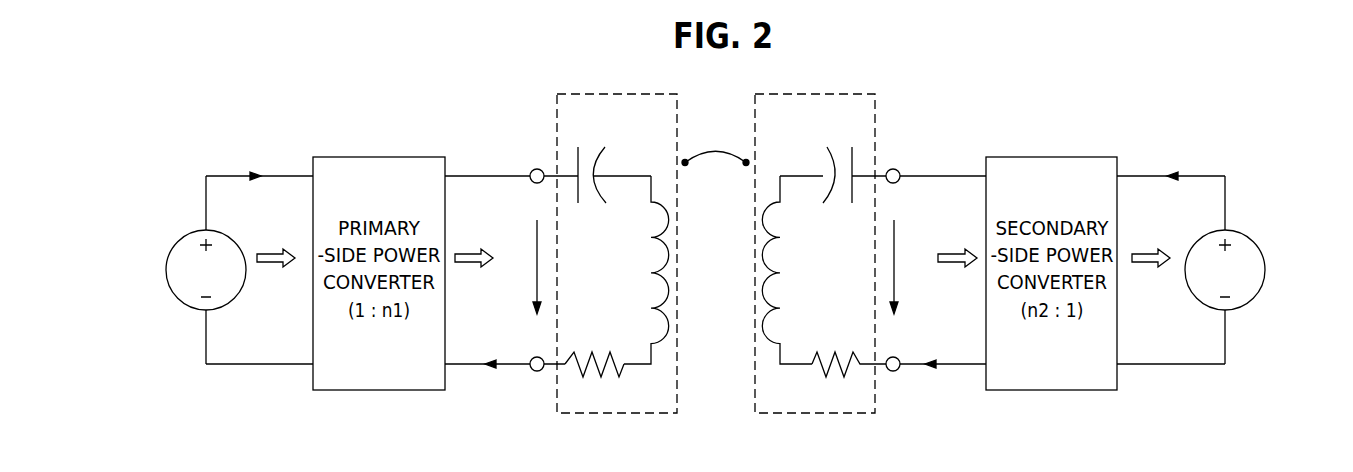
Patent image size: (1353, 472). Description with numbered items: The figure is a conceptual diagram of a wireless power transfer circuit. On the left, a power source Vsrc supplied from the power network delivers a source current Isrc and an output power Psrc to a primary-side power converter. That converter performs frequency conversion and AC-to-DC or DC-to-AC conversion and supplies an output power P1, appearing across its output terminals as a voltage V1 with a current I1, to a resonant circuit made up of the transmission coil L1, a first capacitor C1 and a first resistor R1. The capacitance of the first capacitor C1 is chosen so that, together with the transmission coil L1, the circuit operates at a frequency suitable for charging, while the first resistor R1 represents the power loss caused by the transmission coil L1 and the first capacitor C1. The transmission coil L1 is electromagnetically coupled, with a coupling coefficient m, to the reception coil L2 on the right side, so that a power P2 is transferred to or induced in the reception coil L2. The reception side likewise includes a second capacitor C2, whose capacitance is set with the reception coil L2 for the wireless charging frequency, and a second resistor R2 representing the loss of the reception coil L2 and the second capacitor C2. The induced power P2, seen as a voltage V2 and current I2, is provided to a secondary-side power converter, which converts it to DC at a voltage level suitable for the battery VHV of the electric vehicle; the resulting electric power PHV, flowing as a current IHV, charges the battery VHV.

The power source Vsrc is at (185, 270).
The source current Isrc is at (259, 161).
The output power Psrc is at (275, 241).
The output power P1 is at (474, 241).
The primary side voltage V1 is at (526, 267).
The primary side current I1 is at (505, 349).
The first capacitor C1 is at (614, 158).
The transmission coil L1 is at (646, 270).
The first resistor R1 is at (594, 346).
The coupling coefficient m is at (715, 144).
The second capacitor C2 is at (833, 157).
The reception coil L2 is at (787, 270).
The second resistor R2 is at (849, 346).
The secondary side voltage V2 is at (906, 267).
The power P2 is at (957, 241).
The secondary side current I2 is at (943, 348).
The electric power PHV is at (1148, 241).
The high voltage side current IHV is at (1171, 161).
The battery VHV is at (1248, 270).